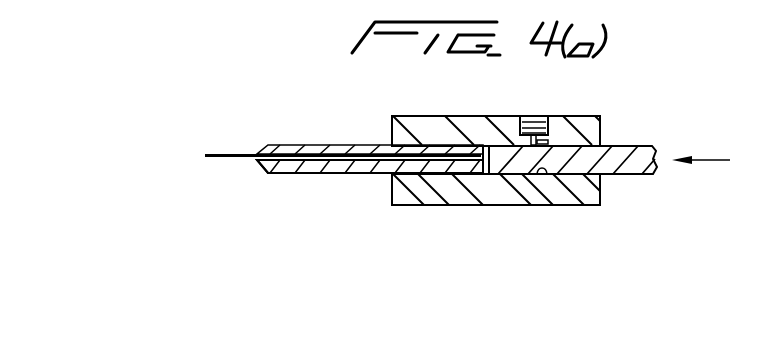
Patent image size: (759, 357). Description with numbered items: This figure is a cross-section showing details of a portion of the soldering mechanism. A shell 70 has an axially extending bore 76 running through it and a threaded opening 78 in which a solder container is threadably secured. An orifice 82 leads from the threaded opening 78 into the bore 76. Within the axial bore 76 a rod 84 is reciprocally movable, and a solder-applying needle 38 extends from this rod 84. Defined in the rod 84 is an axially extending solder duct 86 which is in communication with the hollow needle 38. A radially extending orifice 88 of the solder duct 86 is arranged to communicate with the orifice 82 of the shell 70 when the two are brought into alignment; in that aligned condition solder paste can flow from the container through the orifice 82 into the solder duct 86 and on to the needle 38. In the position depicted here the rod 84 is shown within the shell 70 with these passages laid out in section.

The solder-applying needle 38 is at (236, 160).
The shell 70 is at (568, 120).
The axially extending bore 76 is at (547, 174).
The threaded opening 78 is at (528, 116).
The orifice 82 is at (540, 142).
The rod 84 is at (326, 146).
The solder duct 86 is at (319, 166).
The radially extending orifice 88 is at (490, 172).